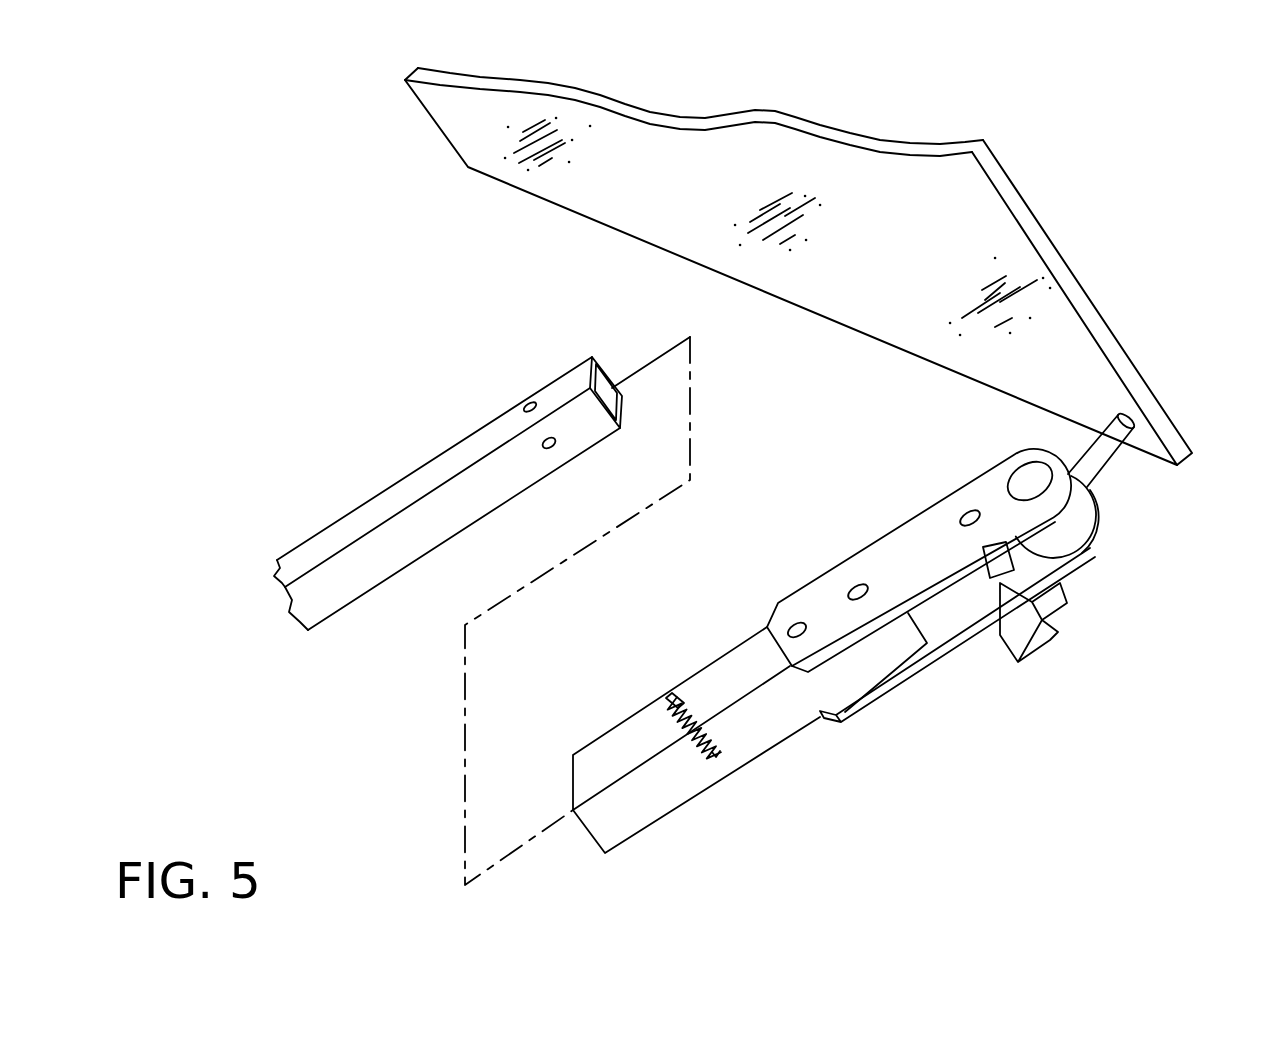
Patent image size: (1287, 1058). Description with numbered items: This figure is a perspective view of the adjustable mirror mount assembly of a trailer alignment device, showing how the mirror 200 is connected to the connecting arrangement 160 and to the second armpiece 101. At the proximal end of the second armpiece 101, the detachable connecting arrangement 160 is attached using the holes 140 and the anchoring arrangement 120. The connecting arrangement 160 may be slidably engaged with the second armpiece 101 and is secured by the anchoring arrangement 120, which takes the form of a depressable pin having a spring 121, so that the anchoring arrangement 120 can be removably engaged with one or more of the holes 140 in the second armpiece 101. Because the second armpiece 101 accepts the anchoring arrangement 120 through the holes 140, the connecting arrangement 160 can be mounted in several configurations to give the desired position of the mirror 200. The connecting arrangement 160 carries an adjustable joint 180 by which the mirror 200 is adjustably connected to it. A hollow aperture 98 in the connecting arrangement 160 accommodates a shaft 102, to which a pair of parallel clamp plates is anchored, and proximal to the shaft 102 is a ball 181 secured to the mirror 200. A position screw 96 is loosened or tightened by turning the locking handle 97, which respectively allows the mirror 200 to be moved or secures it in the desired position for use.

The mirror 200 is at (578, 195).
The second armpiece 101 is at (405, 495).
The hollow aperture 98 is at (608, 390).
The holes 140 is at (530, 405).
The shaft 102 is at (750, 746).
The anchoring arrangement 120 is at (674, 702).
The spring 121 is at (693, 757).
The connecting arrangement 160 is at (882, 553).
The position screw 96 is at (968, 512).
The adjustable joint 180 is at (1030, 481).
The ball 181 is at (1082, 510).
The locking handle 97 is at (1017, 640).